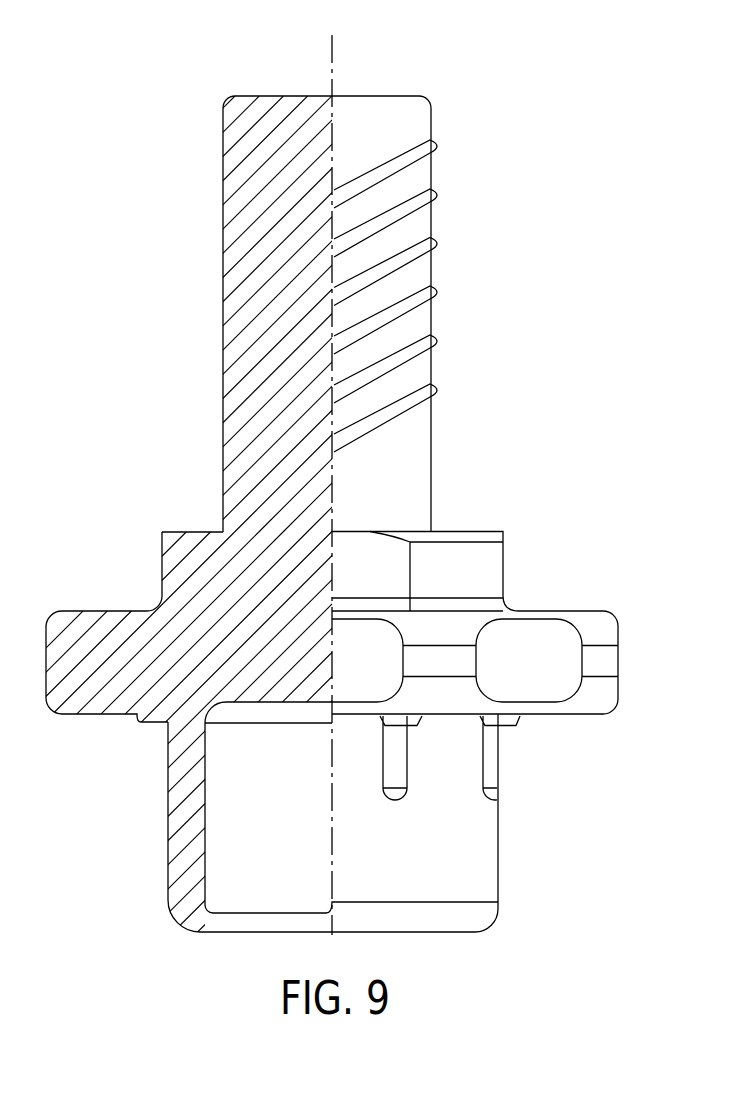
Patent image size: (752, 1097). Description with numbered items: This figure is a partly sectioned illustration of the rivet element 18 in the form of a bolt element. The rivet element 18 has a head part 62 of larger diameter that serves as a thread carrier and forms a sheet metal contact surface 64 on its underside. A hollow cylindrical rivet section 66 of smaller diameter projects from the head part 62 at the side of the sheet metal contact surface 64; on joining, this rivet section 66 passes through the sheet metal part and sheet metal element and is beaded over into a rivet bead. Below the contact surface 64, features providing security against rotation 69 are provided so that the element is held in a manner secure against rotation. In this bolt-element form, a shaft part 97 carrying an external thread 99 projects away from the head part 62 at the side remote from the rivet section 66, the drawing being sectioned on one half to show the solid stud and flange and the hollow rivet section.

The rivet element 18 is at (613, 618).
The head part 62 is at (612, 662).
The sheet metal contact surface 64 is at (112, 715).
The hollow cylindrical rivet section 66 is at (498, 863).
The features providing security against rotation 69 is at (493, 770).
The threaded stud 97 is at (387, 96).
The threads 99 is at (434, 285).